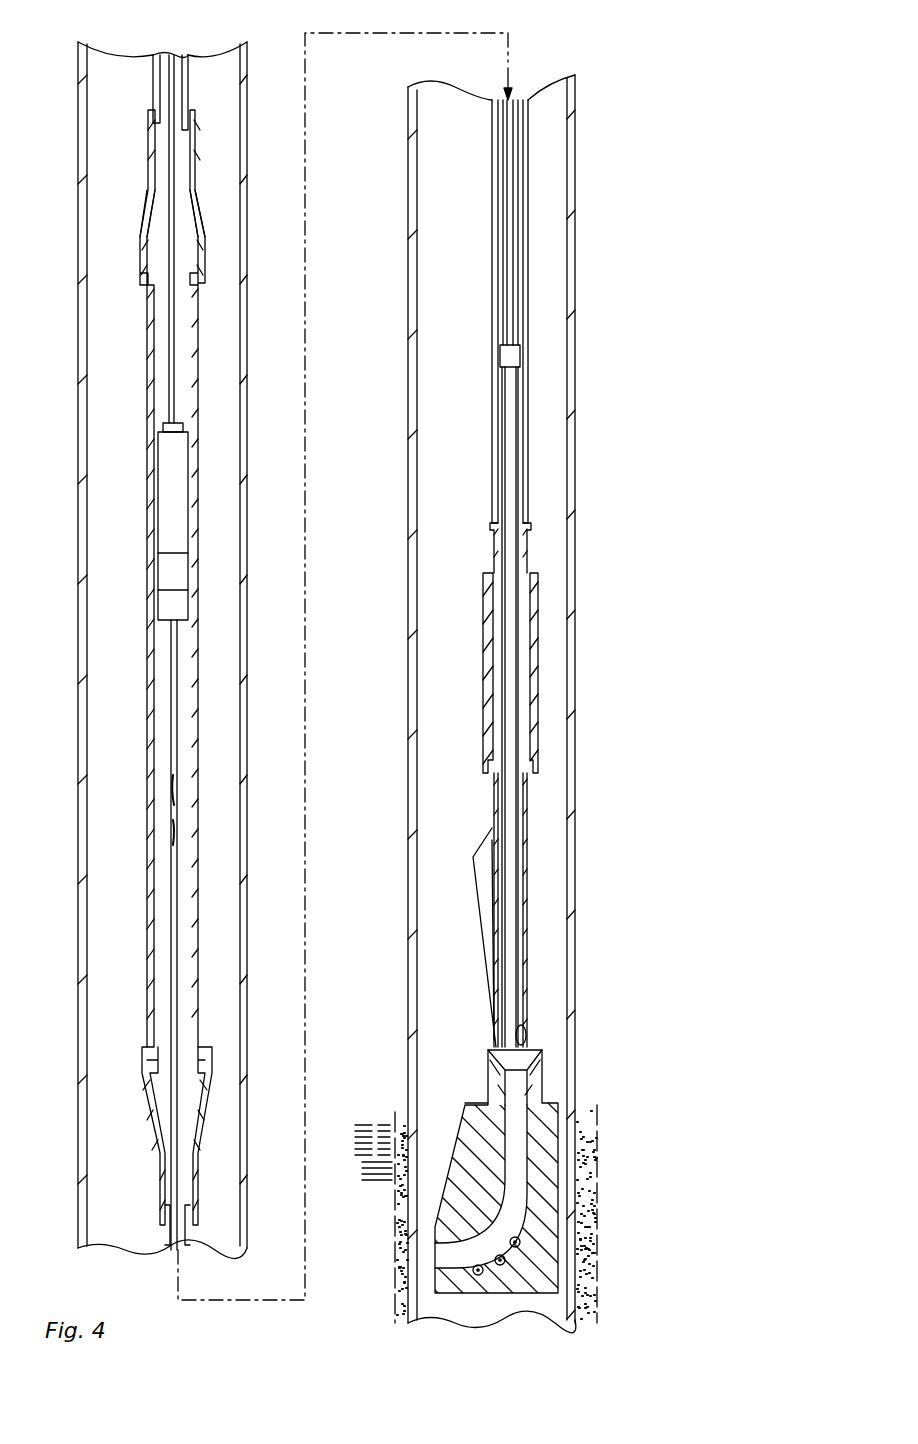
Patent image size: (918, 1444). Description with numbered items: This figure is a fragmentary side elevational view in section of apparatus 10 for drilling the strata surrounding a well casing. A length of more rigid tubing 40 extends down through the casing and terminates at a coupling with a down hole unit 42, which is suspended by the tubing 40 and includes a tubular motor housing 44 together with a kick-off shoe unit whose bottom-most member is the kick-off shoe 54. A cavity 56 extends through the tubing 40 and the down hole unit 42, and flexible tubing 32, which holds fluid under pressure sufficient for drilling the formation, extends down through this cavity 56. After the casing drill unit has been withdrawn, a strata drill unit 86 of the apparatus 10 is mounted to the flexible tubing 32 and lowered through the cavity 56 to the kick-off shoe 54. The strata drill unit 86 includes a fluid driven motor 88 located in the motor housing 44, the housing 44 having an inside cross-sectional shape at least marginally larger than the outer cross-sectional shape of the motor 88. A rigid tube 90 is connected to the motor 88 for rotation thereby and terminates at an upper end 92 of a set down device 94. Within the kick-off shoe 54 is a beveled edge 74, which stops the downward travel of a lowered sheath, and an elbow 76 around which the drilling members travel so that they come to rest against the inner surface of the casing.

The apparatus 10 is at (683, 1082).
The flexible tubing 32 is at (170, 247).
The tubing 40 is at (192, 82).
The down hole unit 42 is at (140, 147).
The tubular motor housing 44 is at (148, 655).
The kick-off shoe 54 is at (558, 1103).
The cavity 56 is at (175, 55).
The beveled edge 74 is at (523, 1033).
The elbow 76 is at (512, 1213).
The strata drill unit 86 is at (148, 452).
The fluid driven motor 88 is at (158, 504).
The rigid tube 90 is at (170, 735).
The upper end 92 is at (520, 358).
The set down device 94 is at (522, 653).